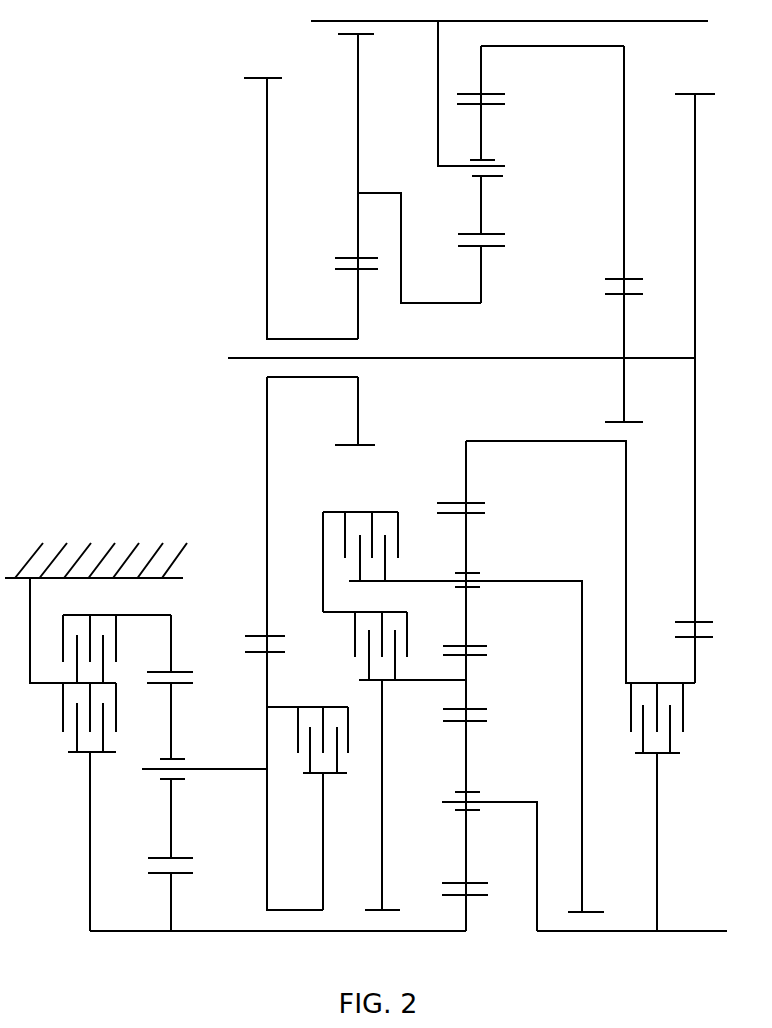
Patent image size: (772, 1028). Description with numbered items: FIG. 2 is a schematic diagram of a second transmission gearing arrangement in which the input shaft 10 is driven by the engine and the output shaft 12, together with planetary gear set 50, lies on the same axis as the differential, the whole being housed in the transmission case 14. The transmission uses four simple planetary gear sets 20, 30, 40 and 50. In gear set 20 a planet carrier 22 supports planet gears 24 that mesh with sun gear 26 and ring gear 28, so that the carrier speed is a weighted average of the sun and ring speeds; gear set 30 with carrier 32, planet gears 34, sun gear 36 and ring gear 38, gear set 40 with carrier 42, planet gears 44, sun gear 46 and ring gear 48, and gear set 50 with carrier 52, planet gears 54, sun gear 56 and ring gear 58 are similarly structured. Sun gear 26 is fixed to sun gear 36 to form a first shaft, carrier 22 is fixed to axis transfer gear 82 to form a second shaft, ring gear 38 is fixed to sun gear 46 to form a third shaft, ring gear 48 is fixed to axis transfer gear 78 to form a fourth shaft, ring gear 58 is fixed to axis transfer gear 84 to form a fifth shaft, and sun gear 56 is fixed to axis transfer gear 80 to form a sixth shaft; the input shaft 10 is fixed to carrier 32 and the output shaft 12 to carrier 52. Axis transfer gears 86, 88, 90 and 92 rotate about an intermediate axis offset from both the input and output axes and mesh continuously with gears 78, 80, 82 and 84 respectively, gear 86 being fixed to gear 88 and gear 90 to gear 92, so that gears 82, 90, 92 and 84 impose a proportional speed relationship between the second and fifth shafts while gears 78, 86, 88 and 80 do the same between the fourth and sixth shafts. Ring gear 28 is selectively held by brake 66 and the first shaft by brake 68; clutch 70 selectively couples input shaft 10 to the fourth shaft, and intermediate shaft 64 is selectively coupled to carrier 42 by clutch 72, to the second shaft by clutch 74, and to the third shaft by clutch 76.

The input shaft 10 is at (697, 930).
The output shaft 12 is at (648, 22).
The transmission case 14 is at (33, 553).
The planetary gear set 20 is at (278, 947).
The planet carrier 22 is at (265, 767).
The planet gears 24 is at (172, 717).
The sun gear 26 is at (210, 880).
The ring gear 28 is at (170, 640).
The planetary gear set 30 is at (467, 929).
The carrier 32 is at (537, 838).
The planet gears 34 is at (467, 738).
The sun gear 36 is at (470, 916).
The ring gear 38 is at (462, 690).
The planetary gear set 40 is at (516, 524).
The carrier 42 is at (583, 613).
The planet gears 44 is at (466, 538).
The sun gear 46 is at (466, 678).
The ring gear 48 is at (462, 470).
The planetary gear set 50 is at (441, 196).
The carrier 52 is at (437, 141).
The planet gears 54 is at (482, 205).
The sun gear 56 is at (481, 71).
The ring gear 58 is at (483, 258).
The intermediate shaft 64 is at (322, 535).
The brake 66 is at (73, 615).
The brake 68 is at (63, 705).
The clutch 70 is at (687, 715).
The clutch 72 is at (380, 512).
The clutch 74 is at (350, 722).
The clutch 76 is at (393, 612).
The axis transfer gear 78 is at (696, 662).
The axis transfer gear 80 is at (622, 135).
The axis transfer gear 82 is at (268, 625).
The axis transfer gear 84 is at (356, 88).
The axis transfer gear 86 is at (697, 580).
The axis transfer gear 88 is at (624, 330).
The axis transfer gear 90 is at (266, 585).
The axis transfer gear 92 is at (357, 322).